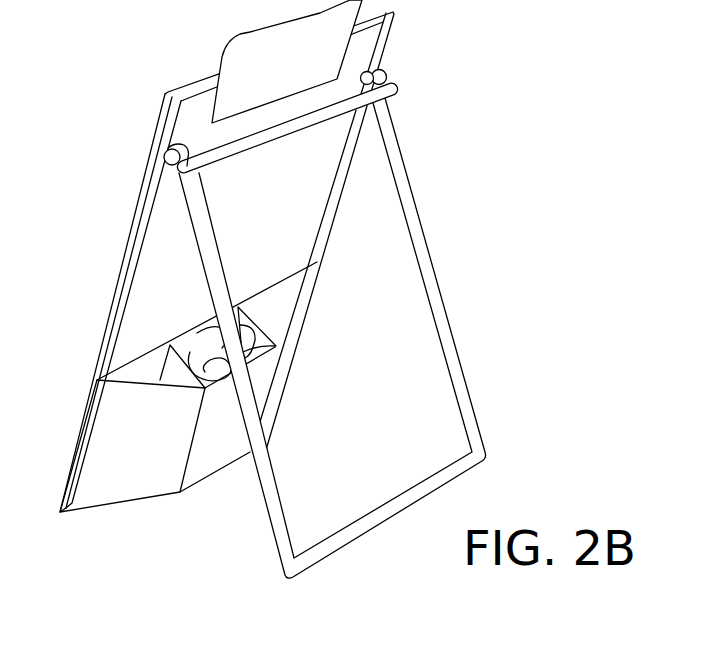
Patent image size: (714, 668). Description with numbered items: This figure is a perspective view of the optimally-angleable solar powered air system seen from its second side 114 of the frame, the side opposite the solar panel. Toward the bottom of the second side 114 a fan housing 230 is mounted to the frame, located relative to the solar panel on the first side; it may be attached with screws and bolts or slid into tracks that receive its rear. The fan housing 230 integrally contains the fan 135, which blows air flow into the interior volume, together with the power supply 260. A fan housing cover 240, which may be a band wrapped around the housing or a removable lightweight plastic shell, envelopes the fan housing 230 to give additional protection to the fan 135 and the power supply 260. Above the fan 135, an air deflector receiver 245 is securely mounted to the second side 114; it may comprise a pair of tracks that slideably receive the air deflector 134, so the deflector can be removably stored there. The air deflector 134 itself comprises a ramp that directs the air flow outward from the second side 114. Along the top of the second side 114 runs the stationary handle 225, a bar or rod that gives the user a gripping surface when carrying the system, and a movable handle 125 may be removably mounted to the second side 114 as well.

The second side 114 is at (274, 227).
The movable handle 125 is at (434, 248).
The air deflector 134 is at (224, 42).
The fan 135 is at (268, 346).
The stationary handle 225 is at (398, 104).
The fan housing 230 is at (262, 312).
The fan housing cover 240 is at (148, 453).
The air deflector receiver 245 is at (352, 56).
The power supply 260 is at (160, 374).